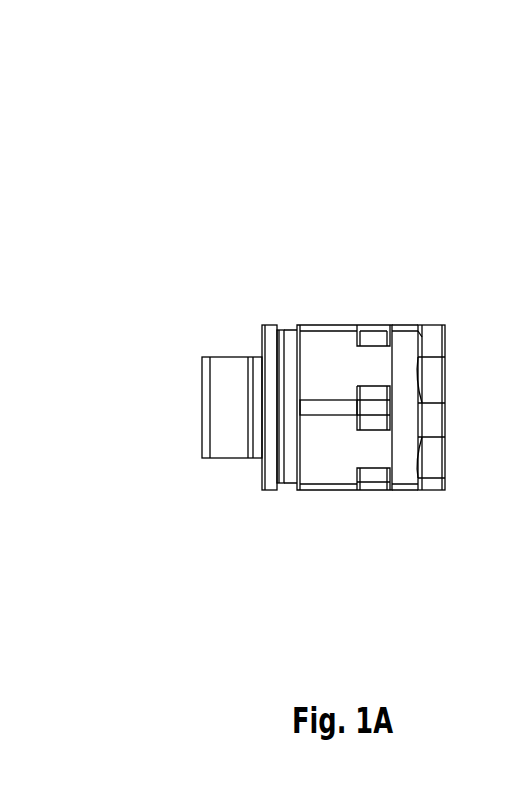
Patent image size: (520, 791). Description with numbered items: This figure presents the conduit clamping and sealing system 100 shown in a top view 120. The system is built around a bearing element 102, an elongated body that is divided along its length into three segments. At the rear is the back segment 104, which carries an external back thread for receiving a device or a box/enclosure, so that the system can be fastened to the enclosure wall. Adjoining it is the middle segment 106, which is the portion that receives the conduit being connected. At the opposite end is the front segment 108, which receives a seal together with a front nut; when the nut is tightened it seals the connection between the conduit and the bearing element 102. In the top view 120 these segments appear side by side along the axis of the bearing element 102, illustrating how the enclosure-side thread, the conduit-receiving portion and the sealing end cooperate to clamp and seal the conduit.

The conduit clamping and sealing system 100 is at (357, 140).
The bearing element 102 is at (223, 458).
The back segment 104 is at (243, 303).
The middle segment 106 is at (352, 298).
The front segment 108 is at (417, 310).
The top view 120 is at (393, 558).